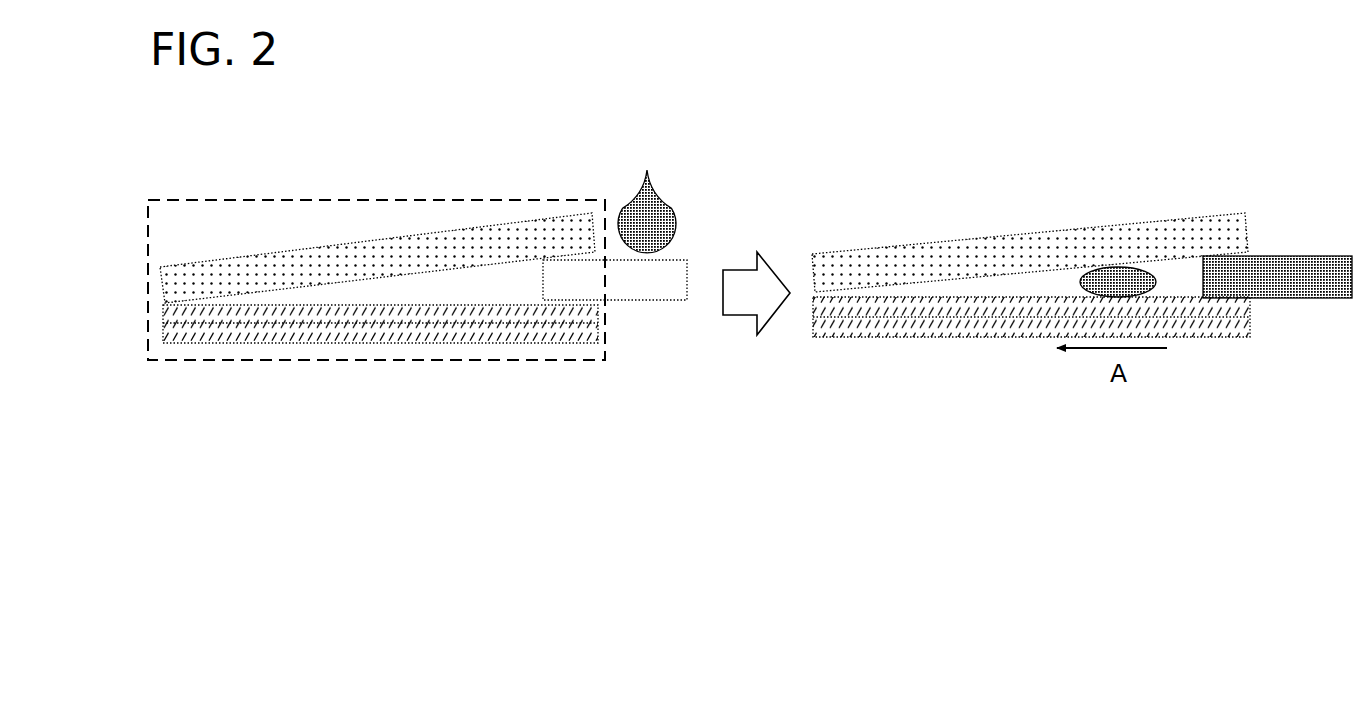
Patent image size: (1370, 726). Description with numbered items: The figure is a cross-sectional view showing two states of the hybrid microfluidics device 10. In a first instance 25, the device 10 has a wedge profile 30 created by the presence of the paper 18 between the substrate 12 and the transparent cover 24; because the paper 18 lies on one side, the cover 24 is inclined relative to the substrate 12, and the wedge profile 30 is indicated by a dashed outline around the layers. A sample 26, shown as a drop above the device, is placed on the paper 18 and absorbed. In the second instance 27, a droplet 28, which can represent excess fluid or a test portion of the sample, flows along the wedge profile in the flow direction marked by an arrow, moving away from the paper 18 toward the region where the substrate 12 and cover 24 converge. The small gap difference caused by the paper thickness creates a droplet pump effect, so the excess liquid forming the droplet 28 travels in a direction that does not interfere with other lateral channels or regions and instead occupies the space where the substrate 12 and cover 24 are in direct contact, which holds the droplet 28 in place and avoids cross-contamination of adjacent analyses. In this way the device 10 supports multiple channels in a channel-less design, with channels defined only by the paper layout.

The hybrid microfluidics device 10 is at (349, 393).
The substrate 12 is at (233, 335).
The paper 18 is at (643, 278).
The transparent cover 24 is at (233, 265).
The first instance 25 is at (540, 160).
The sample 26 is at (678, 212).
The instance 27 is at (1195, 160).
The droplet 28 is at (1122, 272).
The wedge profile 30 is at (538, 360).